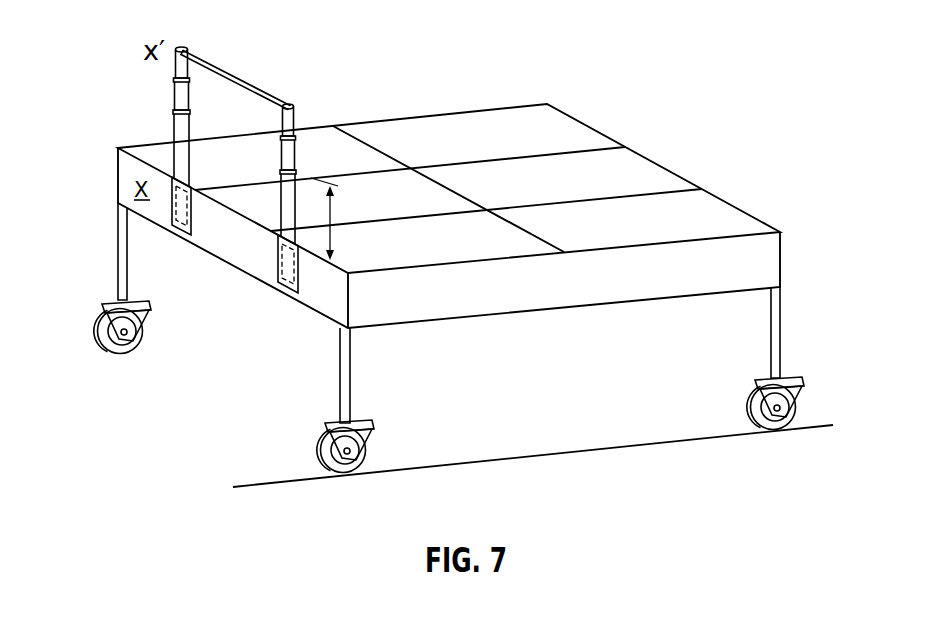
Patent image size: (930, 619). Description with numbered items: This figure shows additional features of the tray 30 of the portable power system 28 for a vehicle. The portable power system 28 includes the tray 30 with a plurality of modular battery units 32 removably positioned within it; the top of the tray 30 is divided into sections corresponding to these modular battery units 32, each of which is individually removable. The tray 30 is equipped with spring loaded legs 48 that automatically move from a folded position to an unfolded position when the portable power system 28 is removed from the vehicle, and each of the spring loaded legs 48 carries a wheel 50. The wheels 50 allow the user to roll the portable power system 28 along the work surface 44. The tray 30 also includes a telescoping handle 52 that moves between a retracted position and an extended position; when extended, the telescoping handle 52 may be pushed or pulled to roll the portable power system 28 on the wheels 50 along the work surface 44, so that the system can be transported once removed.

The portable power system 28 is at (498, 122).
The tray 30 is at (550, 288).
The modular battery units 32 is at (312, 140).
The work surface 44 is at (652, 447).
The spring loaded legs 48 is at (121, 246).
The wheel 50 is at (99, 324).
The telescoping handle 52 is at (239, 68).